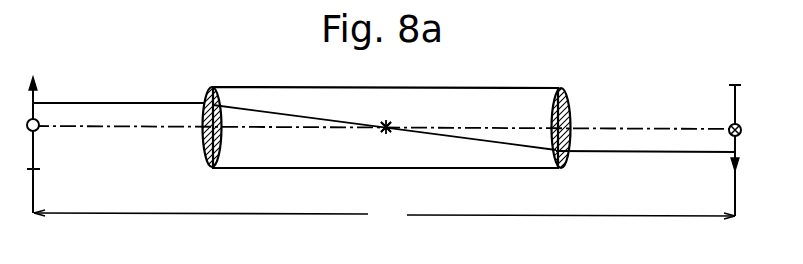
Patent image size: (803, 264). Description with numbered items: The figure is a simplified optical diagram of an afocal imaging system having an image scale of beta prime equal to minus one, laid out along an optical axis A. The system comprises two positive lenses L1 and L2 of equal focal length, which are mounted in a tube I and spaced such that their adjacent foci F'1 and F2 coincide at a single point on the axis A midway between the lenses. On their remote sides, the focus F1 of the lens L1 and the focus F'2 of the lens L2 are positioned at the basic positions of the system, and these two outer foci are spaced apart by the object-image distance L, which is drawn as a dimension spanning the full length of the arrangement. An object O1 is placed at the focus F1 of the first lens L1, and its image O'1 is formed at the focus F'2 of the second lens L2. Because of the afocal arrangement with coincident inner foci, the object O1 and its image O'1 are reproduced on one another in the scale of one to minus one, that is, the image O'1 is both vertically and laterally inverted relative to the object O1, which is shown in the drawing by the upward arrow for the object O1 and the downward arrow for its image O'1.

The object O1 is at (39, 84).
The focus of lens L1 F1 is at (38, 130).
The first positive lens L1 is at (208, 92).
The tube I is at (267, 88).
The focus of lens L2 F2 is at (388, 125).
The focus of lens L1 F'1 is at (361, 144).
The second positive lens L2 is at (571, 94).
The optical axis A is at (614, 126).
The focus of lens L2 F'2 is at (708, 105).
The image of the object O'1 is at (705, 150).
The object-image distance L is at (384, 216).